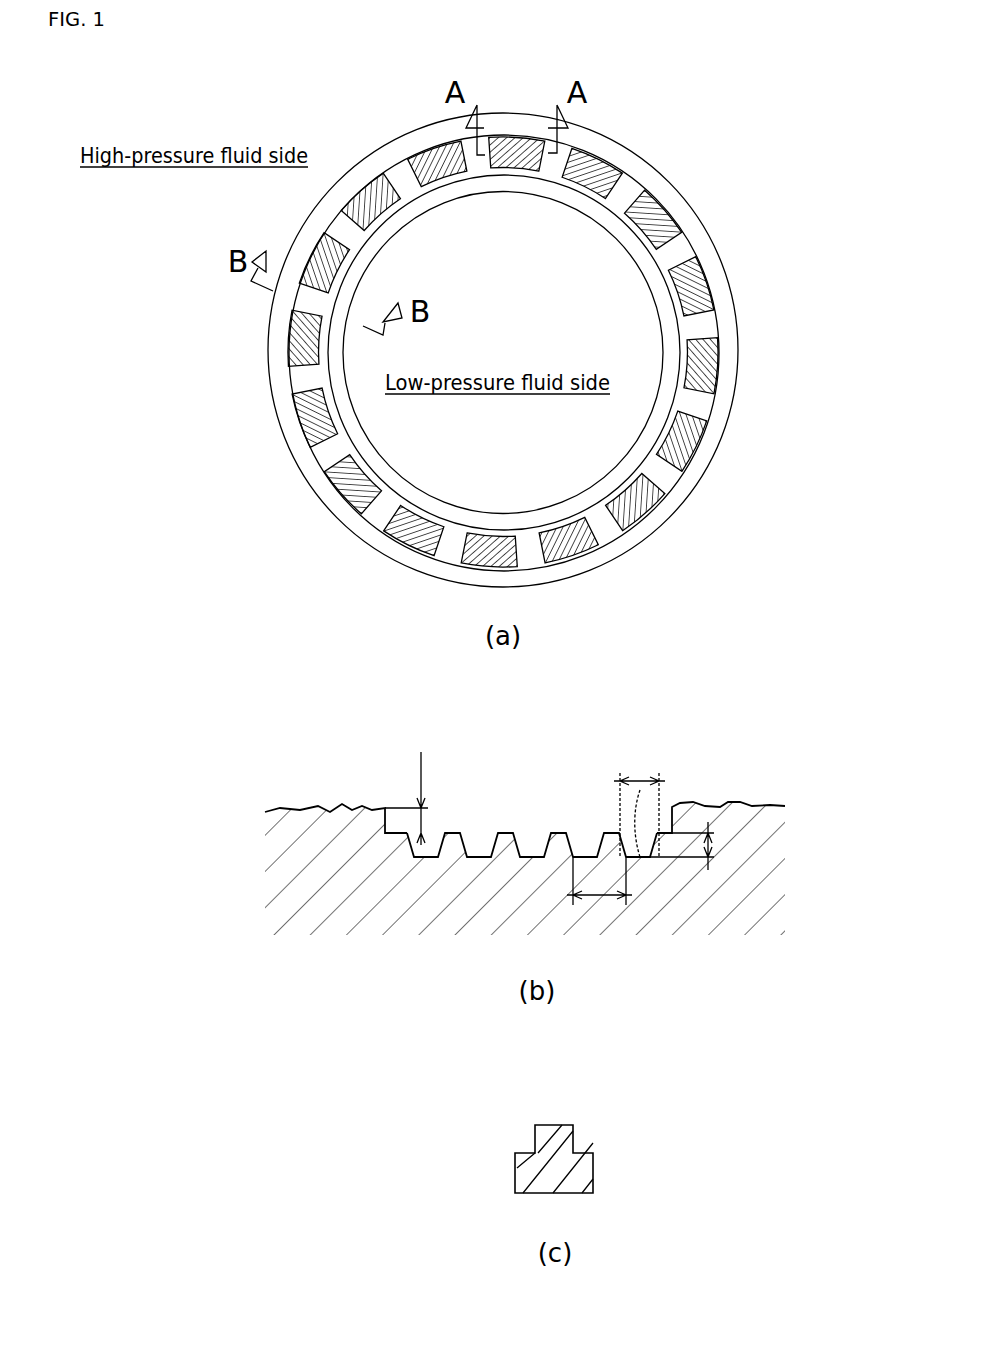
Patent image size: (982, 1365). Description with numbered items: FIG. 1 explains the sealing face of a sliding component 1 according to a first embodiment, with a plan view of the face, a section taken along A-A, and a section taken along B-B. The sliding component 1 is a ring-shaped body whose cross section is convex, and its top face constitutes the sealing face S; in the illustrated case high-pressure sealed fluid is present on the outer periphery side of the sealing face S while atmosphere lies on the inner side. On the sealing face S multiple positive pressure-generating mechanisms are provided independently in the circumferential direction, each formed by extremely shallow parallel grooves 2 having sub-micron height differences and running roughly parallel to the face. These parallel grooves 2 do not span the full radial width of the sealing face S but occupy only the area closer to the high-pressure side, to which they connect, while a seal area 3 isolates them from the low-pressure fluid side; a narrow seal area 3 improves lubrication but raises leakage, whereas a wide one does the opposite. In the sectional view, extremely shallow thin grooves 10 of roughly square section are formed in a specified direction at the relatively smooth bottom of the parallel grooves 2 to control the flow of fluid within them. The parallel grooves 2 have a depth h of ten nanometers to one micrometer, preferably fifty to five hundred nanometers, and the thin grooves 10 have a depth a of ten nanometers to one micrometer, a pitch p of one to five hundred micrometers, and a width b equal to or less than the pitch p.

The sliding component 1 is at (612, 134).
The extremely shallow parallel grooves 2 is at (703, 300).
The seal area 3 is at (512, 170).
The extremely shallow thin grooves 10 is at (637, 852).
The sealing face S is at (404, 178).
The depth of the extremely shallow parallel grooves h is at (417, 798).
The width of the extremely shallow thin grooves b is at (639, 764).
The pitch of the extremely shallow thin grooves p is at (599, 879).
The depth of the extremely shallow thin grooves a is at (693, 846).